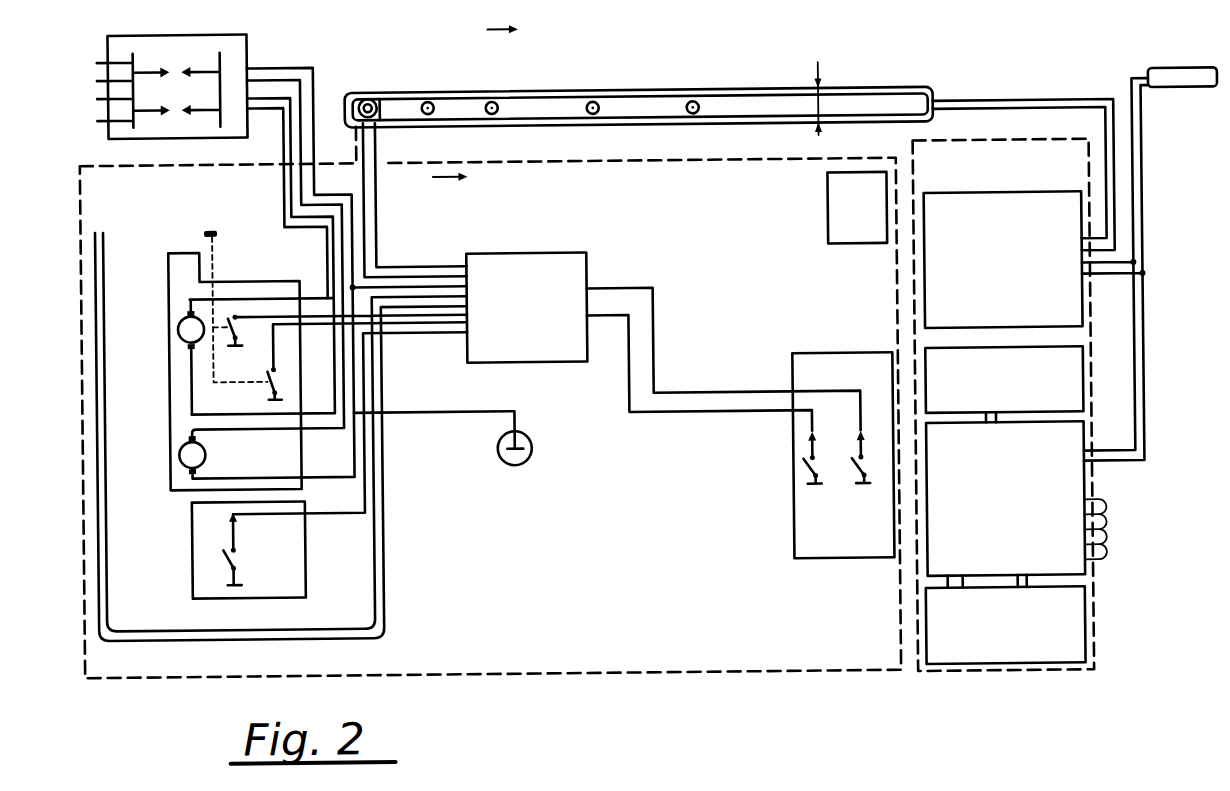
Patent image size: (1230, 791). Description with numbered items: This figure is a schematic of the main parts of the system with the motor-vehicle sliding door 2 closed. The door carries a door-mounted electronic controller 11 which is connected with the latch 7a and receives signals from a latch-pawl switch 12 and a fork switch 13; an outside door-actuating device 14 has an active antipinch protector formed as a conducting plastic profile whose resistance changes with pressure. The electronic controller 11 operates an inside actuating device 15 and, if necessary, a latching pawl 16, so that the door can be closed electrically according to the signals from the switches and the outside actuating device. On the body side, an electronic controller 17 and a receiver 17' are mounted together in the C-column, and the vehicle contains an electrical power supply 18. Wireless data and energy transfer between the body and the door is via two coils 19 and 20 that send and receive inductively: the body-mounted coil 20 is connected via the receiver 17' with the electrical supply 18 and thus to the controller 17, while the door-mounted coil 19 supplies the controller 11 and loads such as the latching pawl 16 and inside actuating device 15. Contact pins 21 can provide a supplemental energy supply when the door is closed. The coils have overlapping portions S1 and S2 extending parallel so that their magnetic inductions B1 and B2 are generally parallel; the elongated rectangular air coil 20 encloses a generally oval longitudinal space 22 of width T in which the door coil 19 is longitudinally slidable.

The motor-vehicle sliding door 2 is at (661, 639).
The contact pins 21 is at (236, 34).
The electronic controller 11 is at (568, 280).
The body-mounted coil 20 is at (724, 92).
The coil portion S2 is at (548, 108).
The longitudinal space 22 is at (760, 106).
The door-mounted coil 19 is at (374, 99).
The coil portion S1 is at (364, 94).
The width T is at (819, 81).
The magnetic induction B2 is at (434, 99).
The magnetic induction B1 is at (375, 122).
The inside actuating device 15 is at (219, 230).
The latching pawl 16 is at (177, 462).
The outside door-actuating device 14 is at (306, 554).
The latch 7a is at (842, 564).
The latch-pawl switch 12 is at (810, 497).
The fork switch 13 is at (860, 497).
The receiver 17' is at (1070, 259).
The electronic controller 17 is at (1054, 498).
The electrical power supply 18 is at (1196, 89).